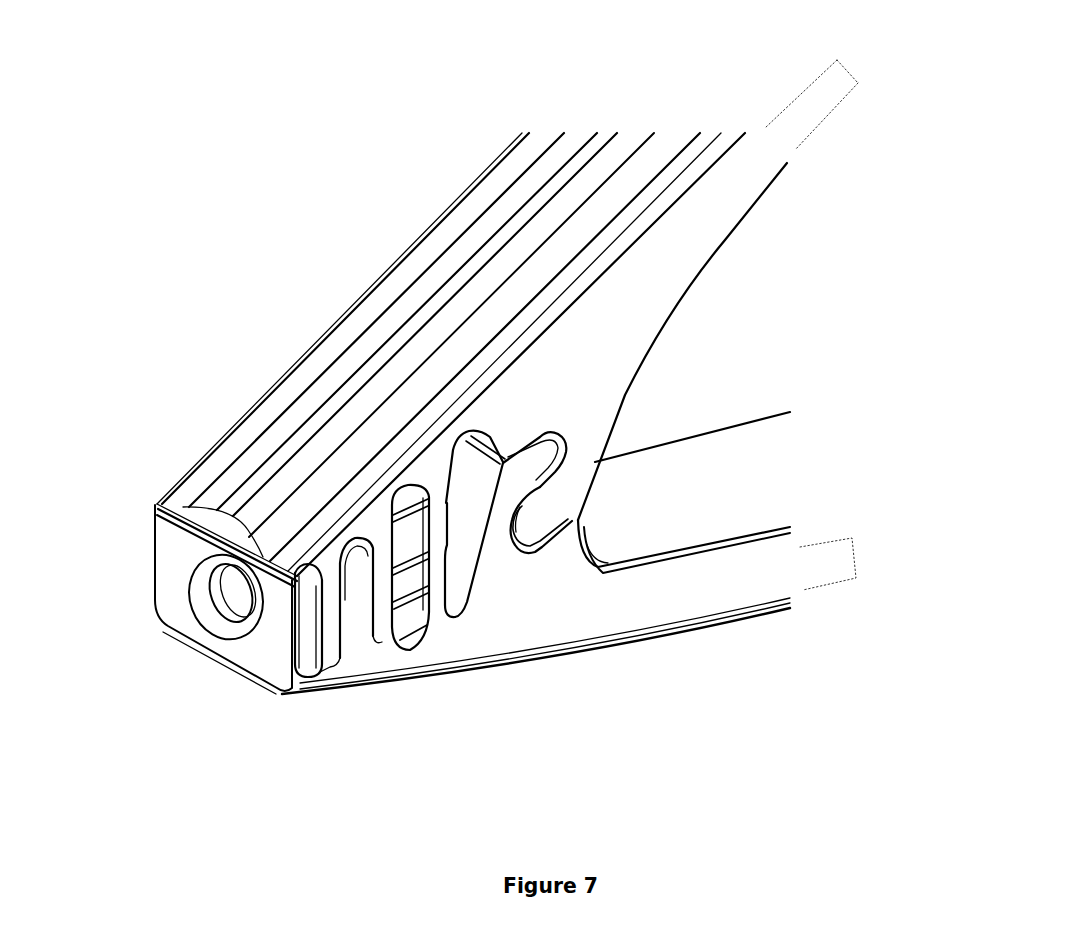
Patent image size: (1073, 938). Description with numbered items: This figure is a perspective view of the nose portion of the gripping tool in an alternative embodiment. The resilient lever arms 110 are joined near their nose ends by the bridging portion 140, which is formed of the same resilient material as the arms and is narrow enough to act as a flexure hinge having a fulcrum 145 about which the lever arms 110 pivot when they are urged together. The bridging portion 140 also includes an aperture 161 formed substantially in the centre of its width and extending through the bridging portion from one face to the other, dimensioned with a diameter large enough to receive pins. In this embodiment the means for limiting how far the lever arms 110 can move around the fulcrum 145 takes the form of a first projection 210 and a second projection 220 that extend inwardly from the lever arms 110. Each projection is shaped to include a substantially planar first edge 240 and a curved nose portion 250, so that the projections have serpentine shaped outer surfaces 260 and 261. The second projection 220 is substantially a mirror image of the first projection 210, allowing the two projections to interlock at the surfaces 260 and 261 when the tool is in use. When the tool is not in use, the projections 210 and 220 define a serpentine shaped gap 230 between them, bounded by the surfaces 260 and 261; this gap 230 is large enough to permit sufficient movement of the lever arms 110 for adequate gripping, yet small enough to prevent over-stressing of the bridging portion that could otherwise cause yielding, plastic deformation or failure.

The lever arm 110 is at (770, 157).
The bridging portion 140 is at (434, 503).
The fulcrum 145 is at (437, 553).
The aperture 161 is at (656, 472).
The first projection 210 is at (500, 540).
The second projection 220 is at (577, 440).
The gap 230 is at (582, 530).
The first edge 240 is at (478, 534).
The curved nose portion 250 is at (540, 470).
The serpentine shaped outer surface 260 is at (518, 558).
The serpentine shaped outer surface 261 is at (530, 529).